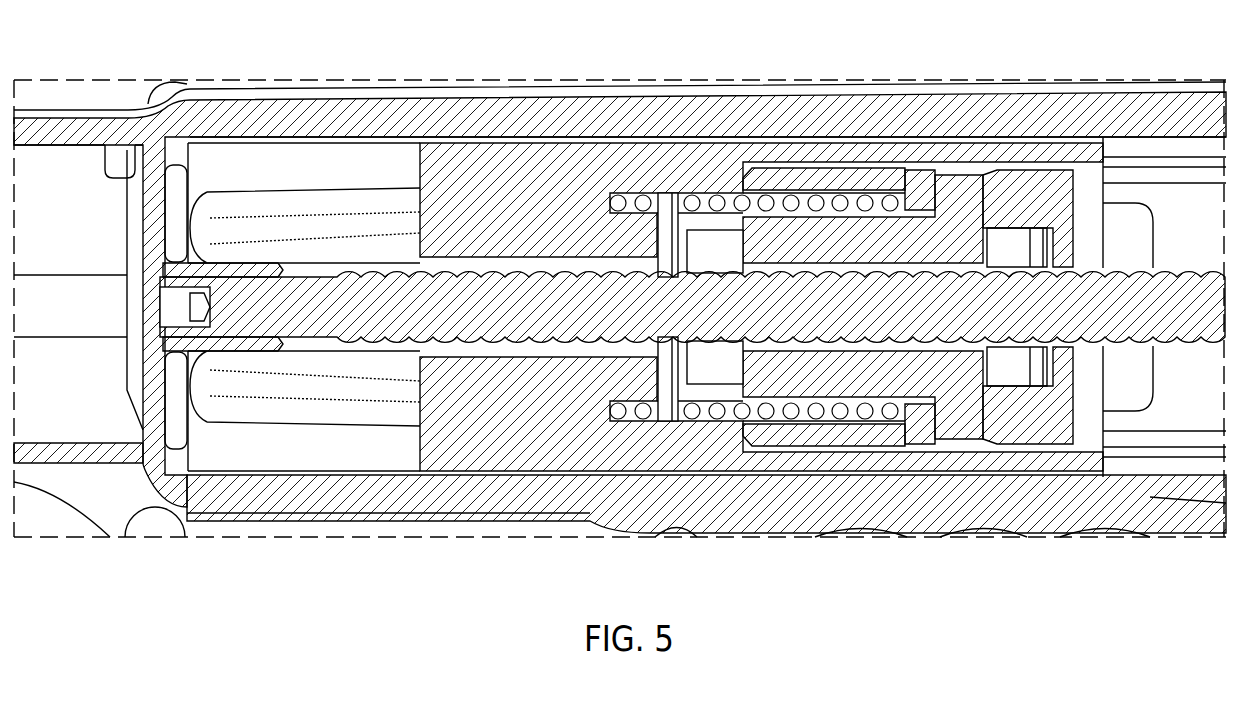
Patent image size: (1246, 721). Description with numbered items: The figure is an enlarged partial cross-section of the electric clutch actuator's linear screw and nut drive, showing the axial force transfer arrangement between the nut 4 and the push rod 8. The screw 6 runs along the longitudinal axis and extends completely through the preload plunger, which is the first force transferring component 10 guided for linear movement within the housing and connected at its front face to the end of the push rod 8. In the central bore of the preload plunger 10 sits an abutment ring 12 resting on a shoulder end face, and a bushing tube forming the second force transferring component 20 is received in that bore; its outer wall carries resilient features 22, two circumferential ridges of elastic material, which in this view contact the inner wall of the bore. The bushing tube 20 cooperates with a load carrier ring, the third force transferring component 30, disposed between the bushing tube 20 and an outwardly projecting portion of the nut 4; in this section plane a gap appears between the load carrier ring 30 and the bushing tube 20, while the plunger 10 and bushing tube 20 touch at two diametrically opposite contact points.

The nut 4 is at (983, 248).
The screw 6 is at (368, 345).
The push rod 8 is at (70, 273).
The first force transferring component 10 is at (556, 130).
The abutment ring 12 is at (713, 437).
The second force transferring component 20 is at (813, 165).
The resilient features 22 is at (870, 448).
The third force transferring component 30 is at (911, 167).